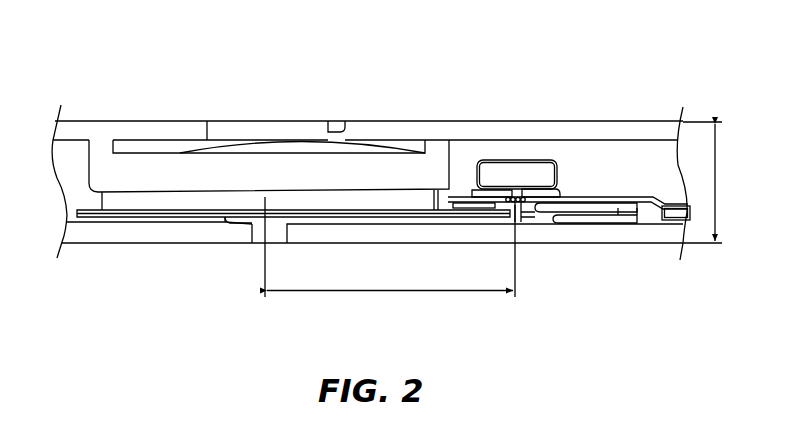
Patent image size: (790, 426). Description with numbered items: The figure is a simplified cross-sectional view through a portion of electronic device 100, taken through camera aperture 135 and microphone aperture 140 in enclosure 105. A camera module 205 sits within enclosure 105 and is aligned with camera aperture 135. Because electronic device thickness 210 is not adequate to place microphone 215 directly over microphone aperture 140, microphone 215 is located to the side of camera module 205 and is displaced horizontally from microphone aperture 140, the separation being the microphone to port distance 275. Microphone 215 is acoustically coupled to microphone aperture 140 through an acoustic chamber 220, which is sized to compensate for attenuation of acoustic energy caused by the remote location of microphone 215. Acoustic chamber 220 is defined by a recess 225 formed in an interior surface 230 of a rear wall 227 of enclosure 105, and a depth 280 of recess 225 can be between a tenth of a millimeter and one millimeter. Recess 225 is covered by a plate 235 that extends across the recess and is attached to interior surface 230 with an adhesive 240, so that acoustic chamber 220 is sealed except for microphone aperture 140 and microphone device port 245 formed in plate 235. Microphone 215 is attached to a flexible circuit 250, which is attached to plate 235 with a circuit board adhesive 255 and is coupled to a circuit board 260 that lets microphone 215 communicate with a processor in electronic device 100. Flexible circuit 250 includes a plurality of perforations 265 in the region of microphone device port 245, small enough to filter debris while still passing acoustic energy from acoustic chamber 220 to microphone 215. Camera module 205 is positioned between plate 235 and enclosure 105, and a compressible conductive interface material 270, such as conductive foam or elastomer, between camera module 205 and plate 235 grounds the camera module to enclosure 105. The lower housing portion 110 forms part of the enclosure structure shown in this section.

The electronic device 100 is at (296, 66).
The enclosure 105 is at (573, 133).
The housing base 110 is at (173, 244).
The camera aperture 135 is at (343, 124).
The microphone aperture 140 is at (279, 228).
The camera module 205 is at (437, 152).
The electronic device thickness 210 is at (717, 180).
The microphone 215 is at (516, 175).
The acoustic chamber 220 is at (360, 218).
The recess 225 is at (528, 213).
The rear wall 227 is at (97, 232).
The interior surface 230 is at (588, 212).
The plate 235 is at (436, 216).
The adhesive 240 is at (553, 220).
The microphone device port 245 is at (507, 212).
The flexible circuit 250 is at (593, 197).
The circuit board adhesive 255 is at (622, 210).
The circuit board 260 is at (675, 222).
The plurality of perforations 265 is at (518, 207).
The compressible conductive interface material 270 is at (138, 200).
The microphone to port distance 275 is at (398, 292).
The depth 280 is at (250, 227).